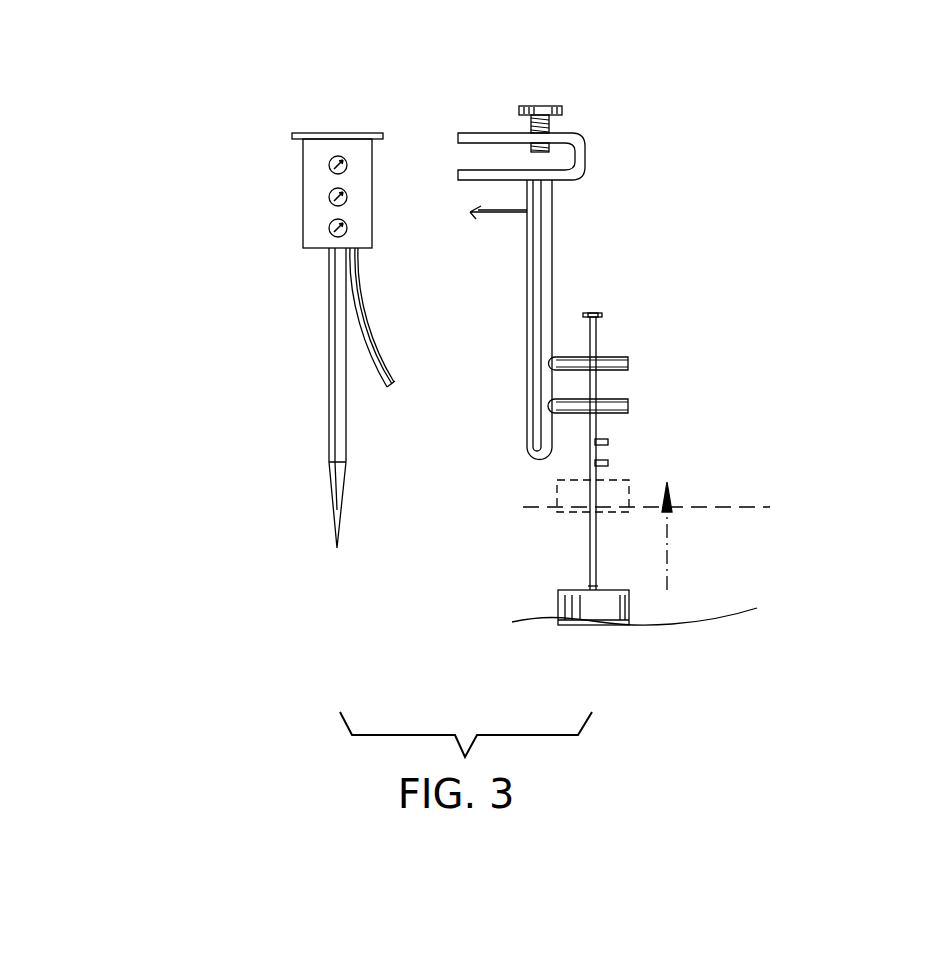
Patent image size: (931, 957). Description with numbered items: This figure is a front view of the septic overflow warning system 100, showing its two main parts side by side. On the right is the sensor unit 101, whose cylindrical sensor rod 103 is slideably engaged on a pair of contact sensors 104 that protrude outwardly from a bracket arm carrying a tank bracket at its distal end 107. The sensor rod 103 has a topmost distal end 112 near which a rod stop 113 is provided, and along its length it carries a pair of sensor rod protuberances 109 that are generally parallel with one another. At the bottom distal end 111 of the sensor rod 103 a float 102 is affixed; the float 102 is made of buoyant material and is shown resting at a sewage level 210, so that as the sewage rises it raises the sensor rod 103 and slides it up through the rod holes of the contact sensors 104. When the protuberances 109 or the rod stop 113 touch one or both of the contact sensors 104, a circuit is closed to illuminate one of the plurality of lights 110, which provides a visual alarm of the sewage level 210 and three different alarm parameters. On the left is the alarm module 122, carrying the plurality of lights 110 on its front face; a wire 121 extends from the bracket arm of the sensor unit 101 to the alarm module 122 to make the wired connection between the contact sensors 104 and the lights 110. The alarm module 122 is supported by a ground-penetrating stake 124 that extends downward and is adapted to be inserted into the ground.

The septic overflow warning system 100 is at (130, 98).
The alarm module 122 is at (260, 105).
The plurality of lights 110 is at (329, 165).
The ground-penetrating stake 124 is at (339, 380).
The wire 121 is at (362, 318).
The sensor unit 101 is at (455, 82).
The distal end 107 is at (539, 182).
The sensor rod 103 is at (590, 543).
The rod stop 113 is at (597, 313).
The topmost distal end 112 is at (598, 318).
The pair of contact sensors 104 is at (628, 363).
The pair of sensor rod protuberances 109 is at (608, 463).
The bottom distal end 111 is at (590, 583).
The float 102 is at (628, 612).
The sewage level 210 is at (730, 617).